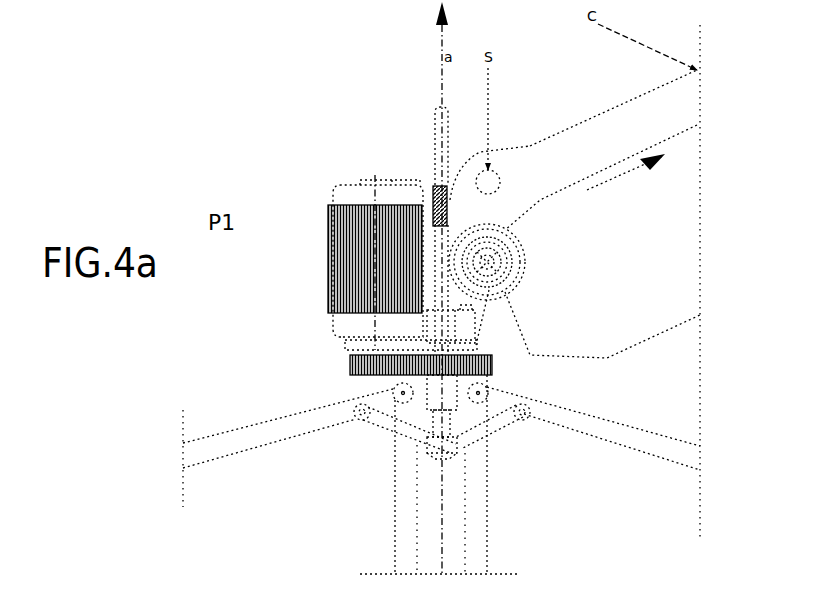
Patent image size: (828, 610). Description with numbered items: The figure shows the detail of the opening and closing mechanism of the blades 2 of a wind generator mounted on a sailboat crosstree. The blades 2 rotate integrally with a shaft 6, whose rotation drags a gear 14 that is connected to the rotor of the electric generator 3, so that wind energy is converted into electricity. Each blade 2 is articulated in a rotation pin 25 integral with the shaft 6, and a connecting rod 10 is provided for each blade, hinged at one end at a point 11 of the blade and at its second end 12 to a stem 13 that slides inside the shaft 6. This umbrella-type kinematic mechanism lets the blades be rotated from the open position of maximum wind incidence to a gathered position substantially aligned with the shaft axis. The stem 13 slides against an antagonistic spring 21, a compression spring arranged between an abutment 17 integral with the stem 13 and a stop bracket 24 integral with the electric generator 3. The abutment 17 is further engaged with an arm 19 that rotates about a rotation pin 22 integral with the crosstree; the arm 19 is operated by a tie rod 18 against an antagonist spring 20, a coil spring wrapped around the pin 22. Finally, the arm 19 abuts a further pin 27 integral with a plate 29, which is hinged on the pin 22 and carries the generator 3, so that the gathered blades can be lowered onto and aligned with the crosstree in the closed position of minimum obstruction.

The blades 2 is at (252, 436).
The electric generator 3 is at (331, 191).
The shaft 6 is at (429, 427).
The connecting rod 10 is at (493, 434).
The point of the blade 11 is at (526, 417).
The second end 12 is at (455, 447).
The stem 13 is at (429, 400).
The gear 14 is at (348, 365).
The abutment 17 is at (452, 228).
The tie rod 18 is at (675, 138).
The arm 19 is at (327, 246).
The antagonist spring 20 is at (514, 254).
The antagonistic spring 21 is at (428, 235).
The rotation pin 22 is at (495, 268).
The stop bracket 24 is at (430, 180).
The rotation pin 25 is at (490, 390).
The pin 27 is at (474, 312).
The plate 29 is at (472, 330).